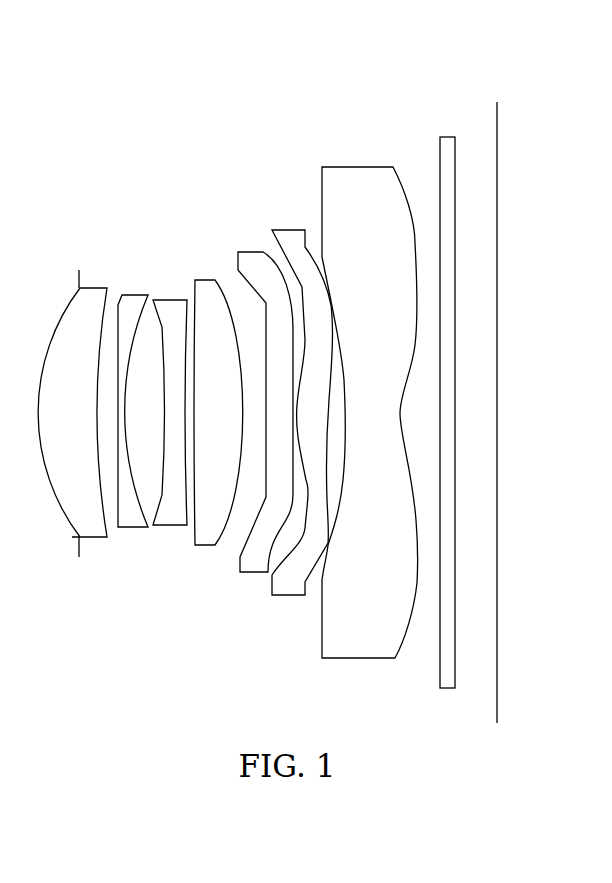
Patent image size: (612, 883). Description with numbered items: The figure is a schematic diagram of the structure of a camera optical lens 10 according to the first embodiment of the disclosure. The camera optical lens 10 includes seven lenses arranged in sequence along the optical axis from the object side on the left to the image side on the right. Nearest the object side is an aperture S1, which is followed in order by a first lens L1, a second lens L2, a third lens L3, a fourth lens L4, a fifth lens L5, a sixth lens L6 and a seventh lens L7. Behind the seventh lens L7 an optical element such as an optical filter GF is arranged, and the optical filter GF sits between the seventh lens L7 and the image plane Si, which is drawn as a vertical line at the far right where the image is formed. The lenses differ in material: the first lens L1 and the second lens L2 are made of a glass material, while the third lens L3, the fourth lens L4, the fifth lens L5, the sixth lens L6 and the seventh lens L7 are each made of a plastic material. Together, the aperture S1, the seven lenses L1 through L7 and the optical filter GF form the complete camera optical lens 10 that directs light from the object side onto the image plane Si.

The camera optical lens 10 is at (273, 51).
The aperture S1 is at (60, 413).
The first lens L1 is at (74, 399).
The second lens L2 is at (133, 399).
The third lens L3 is at (170, 399).
The fourth lens L4 is at (218, 396).
The fifth lens L5 is at (264, 400).
The sixth lens L6 is at (302, 399).
The seventh lens L7 is at (370, 400).
The optical filter GF is at (448, 397).
The image plane Si is at (495, 397).